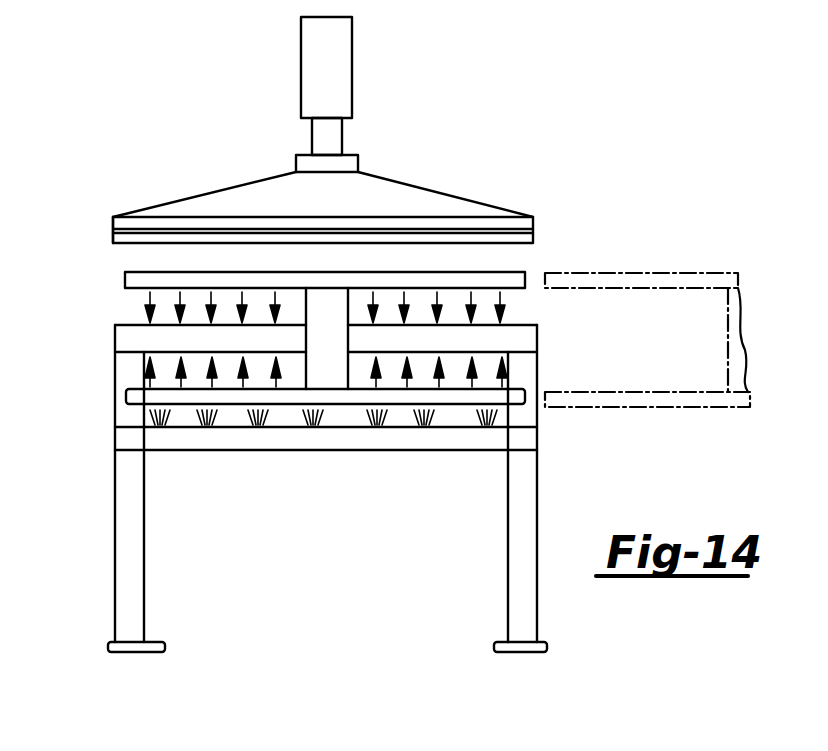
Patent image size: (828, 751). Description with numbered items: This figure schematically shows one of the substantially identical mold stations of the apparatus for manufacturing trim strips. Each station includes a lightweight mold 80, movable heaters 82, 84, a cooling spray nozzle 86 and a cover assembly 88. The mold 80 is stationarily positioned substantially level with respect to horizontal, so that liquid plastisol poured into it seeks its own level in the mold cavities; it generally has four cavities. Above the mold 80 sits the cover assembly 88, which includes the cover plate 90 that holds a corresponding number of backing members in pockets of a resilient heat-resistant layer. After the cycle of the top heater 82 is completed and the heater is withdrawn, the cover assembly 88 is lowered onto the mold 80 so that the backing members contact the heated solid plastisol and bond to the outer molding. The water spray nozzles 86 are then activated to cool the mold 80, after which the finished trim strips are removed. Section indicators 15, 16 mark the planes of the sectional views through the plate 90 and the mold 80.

The mold 80 is at (115, 347).
The movable heater 82 is at (125, 279).
The movable heater 84 is at (123, 398).
The cooling spray nozzle 86 is at (323, 442).
The cover assembly 88 is at (438, 186).
The cover plate 90 is at (138, 225).
The section line 15 is at (70, 252).
The section line 16 is at (72, 312).